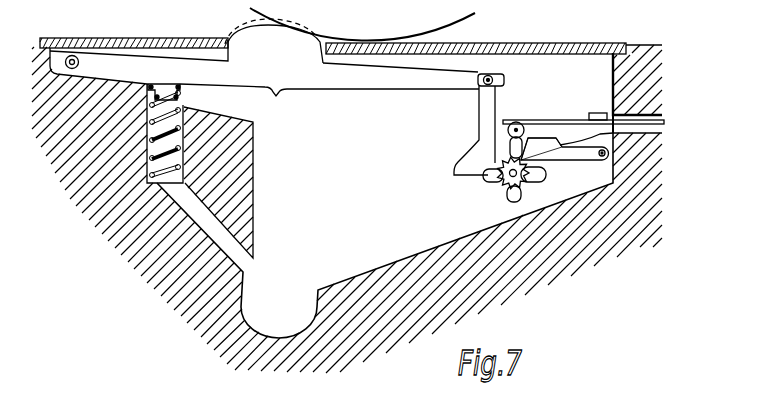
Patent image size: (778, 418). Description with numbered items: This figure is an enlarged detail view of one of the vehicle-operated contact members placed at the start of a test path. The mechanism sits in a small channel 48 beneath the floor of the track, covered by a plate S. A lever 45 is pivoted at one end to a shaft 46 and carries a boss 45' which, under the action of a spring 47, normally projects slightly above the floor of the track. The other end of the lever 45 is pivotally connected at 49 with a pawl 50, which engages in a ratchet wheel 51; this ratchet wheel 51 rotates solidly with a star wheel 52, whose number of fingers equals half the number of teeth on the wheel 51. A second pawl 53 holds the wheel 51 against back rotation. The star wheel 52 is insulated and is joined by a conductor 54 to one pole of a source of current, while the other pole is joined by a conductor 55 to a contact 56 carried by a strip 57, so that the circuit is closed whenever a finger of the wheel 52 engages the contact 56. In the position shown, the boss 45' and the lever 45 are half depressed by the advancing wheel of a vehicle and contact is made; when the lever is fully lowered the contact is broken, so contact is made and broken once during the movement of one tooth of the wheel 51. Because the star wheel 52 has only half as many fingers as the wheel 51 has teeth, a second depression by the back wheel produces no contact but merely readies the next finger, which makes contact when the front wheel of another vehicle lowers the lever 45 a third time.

The plate S is at (175, 40).
The lever 45 is at (264, 79).
The boss 45' is at (274, 41).
The shaft 46 is at (72, 55).
The spring 47 is at (181, 97).
The channel 48 is at (347, 209).
The pivotal connection 49 is at (500, 76).
The pawl 50 is at (485, 115).
The ratchet wheel 51 is at (505, 178).
The star wheel 52 is at (514, 201).
The second pawl 53 is at (541, 149).
The conductor 54 is at (564, 162).
The conductor 55 is at (630, 113).
The contact 56 is at (517, 122).
The strip 57 is at (559, 118).